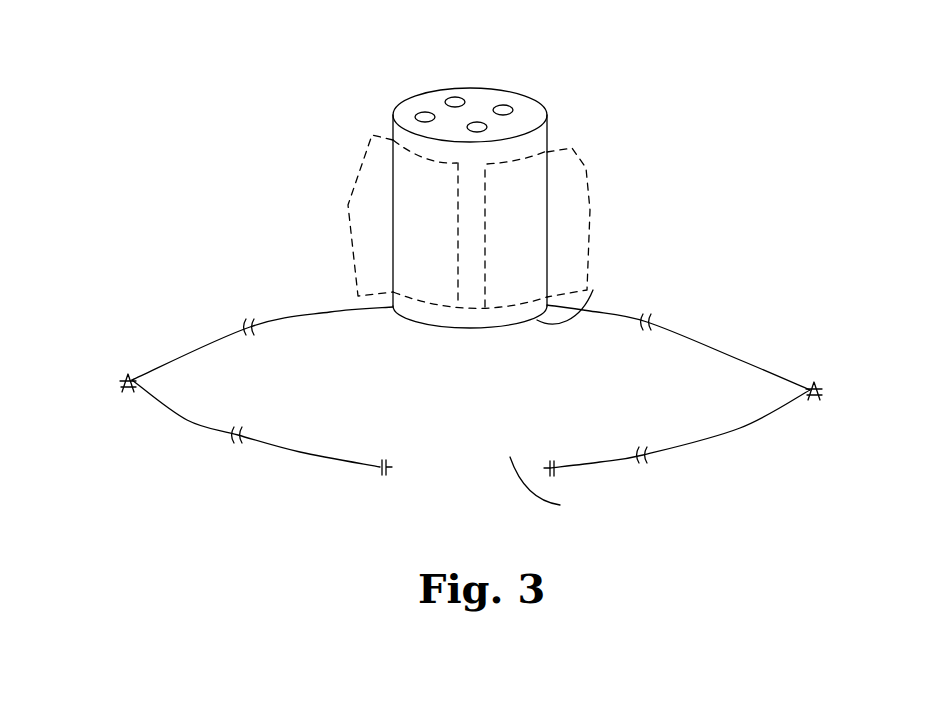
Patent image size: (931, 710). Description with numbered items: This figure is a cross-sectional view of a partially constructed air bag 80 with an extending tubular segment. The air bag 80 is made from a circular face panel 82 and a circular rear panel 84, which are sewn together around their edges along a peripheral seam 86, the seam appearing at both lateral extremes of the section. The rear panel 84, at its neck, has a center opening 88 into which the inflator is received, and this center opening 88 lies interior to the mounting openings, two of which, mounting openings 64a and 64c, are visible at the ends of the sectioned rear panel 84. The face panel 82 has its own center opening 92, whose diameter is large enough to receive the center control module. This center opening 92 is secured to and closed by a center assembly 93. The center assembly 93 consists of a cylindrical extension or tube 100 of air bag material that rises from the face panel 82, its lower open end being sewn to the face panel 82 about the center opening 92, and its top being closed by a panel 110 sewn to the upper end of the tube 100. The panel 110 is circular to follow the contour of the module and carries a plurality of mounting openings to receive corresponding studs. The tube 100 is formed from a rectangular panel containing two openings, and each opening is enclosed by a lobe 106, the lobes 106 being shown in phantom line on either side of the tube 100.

The mounting opening 64a is at (555, 462).
The mounting opening 64c is at (380, 463).
The air bag 80 is at (178, 342).
The circular face panel 82 is at (692, 332).
The circular rear panel 84 is at (735, 433).
The peripheral seam 86 is at (125, 375).
The center opening 88 is at (551, 487).
The center opening 92 is at (547, 302).
The center assembly 93 is at (558, 213).
The cylindrical extension or tube 100 is at (393, 227).
The lobe 106 is at (335, 215).
The panel 110 is at (430, 100).